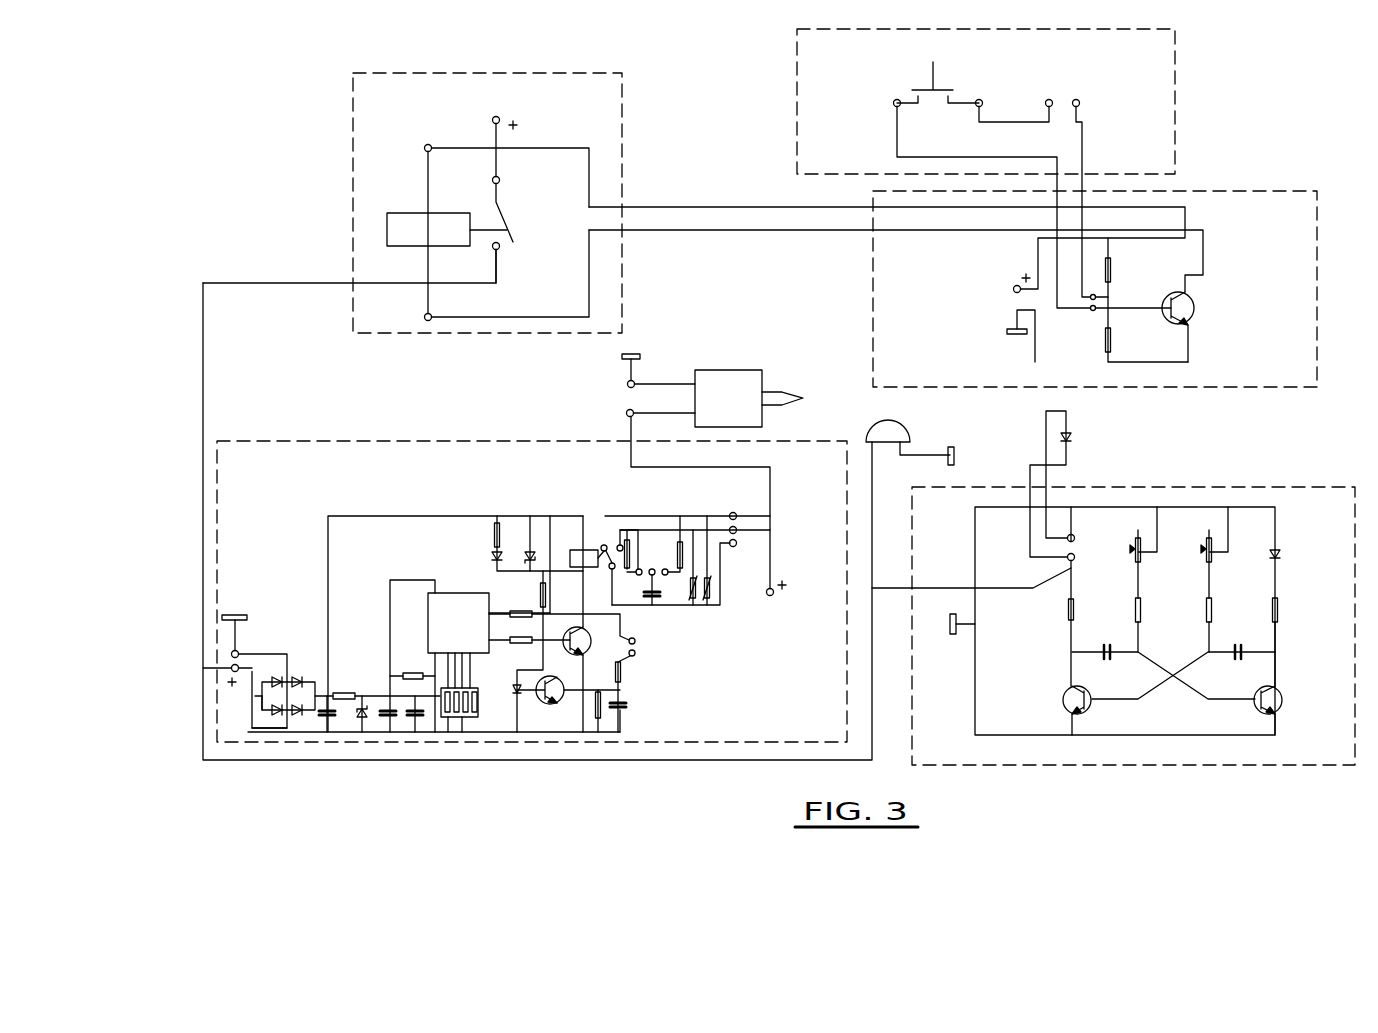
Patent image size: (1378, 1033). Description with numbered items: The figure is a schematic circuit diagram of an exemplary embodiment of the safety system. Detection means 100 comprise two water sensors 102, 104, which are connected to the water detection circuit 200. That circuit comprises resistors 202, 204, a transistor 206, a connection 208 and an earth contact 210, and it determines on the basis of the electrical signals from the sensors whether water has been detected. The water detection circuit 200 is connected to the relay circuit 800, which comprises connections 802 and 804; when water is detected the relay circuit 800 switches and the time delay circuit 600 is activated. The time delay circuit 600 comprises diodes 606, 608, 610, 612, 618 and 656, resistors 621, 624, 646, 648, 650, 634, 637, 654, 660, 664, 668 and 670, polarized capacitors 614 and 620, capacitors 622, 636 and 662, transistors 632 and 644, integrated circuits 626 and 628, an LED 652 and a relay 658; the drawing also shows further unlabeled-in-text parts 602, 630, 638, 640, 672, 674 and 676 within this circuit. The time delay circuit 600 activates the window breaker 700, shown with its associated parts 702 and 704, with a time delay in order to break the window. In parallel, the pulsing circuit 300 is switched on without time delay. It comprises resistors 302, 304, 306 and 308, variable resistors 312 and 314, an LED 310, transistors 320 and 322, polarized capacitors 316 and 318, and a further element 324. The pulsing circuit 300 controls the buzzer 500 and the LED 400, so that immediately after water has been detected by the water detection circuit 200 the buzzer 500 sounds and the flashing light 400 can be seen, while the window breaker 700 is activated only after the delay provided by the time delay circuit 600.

The detection means 100 is at (1203, 68).
The water sensor 102 is at (945, 42).
The water sensor 104 is at (1045, 90).
The water detection circuit 200 is at (1264, 169).
The resistor 202 is at (1113, 268).
The resistor 204 is at (1113, 340).
The transistor 206 is at (1196, 308).
The connection 208 is at (1013, 288).
The earth contact 210 is at (1015, 335).
The pulsing circuit 300 is at (1094, 783).
The resistor 302 is at (1068, 612).
The resistor 304 is at (1140, 607).
The resistor 306 is at (1218, 605).
The resistor 308 is at (1278, 605).
The LED 310 is at (1280, 553).
The variable resistor 312 is at (1205, 548).
The variable resistor 314 is at (1135, 547).
The polarized capacitor 316 is at (1106, 645).
The polarized capacitor 318 is at (1237, 662).
The transistor 320 is at (1062, 700).
The transistor 322 is at (1258, 712).
The connector 324 is at (953, 634).
The LED 400 is at (1072, 437).
The buzzer 500 is at (893, 428).
The time delay circuit 600 is at (340, 415).
The capacitor 602 is at (233, 612).
The diode 606 is at (258, 680).
The diode 608 is at (298, 678).
The diode 610 is at (272, 708).
The diode 612 is at (297, 727).
The polarized capacitor 614 is at (328, 720).
The Zener diode 618 is at (368, 710).
The polarized capacitor 620 is at (385, 718).
The resistor 621 is at (343, 693).
The capacitor 622 is at (417, 717).
The resistor 624 is at (410, 670).
The integrated circuit 626 is at (432, 615).
The integrated circuit 628 is at (462, 718).
The diode 630 is at (513, 693).
The transistor 632 is at (533, 702).
The resistor 634 is at (598, 703).
The capacitor 636 is at (613, 710).
The resistor 637 is at (622, 683).
The capacitor 638 is at (620, 711).
The output terminal 640 is at (634, 656).
The transistor 644 is at (592, 632).
The resistor 646 is at (510, 640).
The resistor 648 is at (520, 611).
The resistor 650 is at (542, 593).
The LED 652 is at (493, 553).
The resistor 654 is at (494, 535).
The diode 656 is at (528, 557).
The relay 658 is at (570, 527).
The resistor 660 is at (604, 546).
The capacitor 662 is at (636, 642).
The resistor 664 is at (677, 545).
The resistor 668 is at (693, 598).
The resistor 670 is at (708, 584).
The terminal 672 is at (736, 513).
The positive terminal 674 is at (774, 596).
The terminal 676 is at (737, 540).
The window breaker 700 is at (732, 380).
The capacitor 702 is at (630, 352).
The motor terminal 704 is at (627, 413).
The relay circuit 800 is at (305, 109).
The connection 802 is at (500, 249).
The connection 804 is at (493, 118).